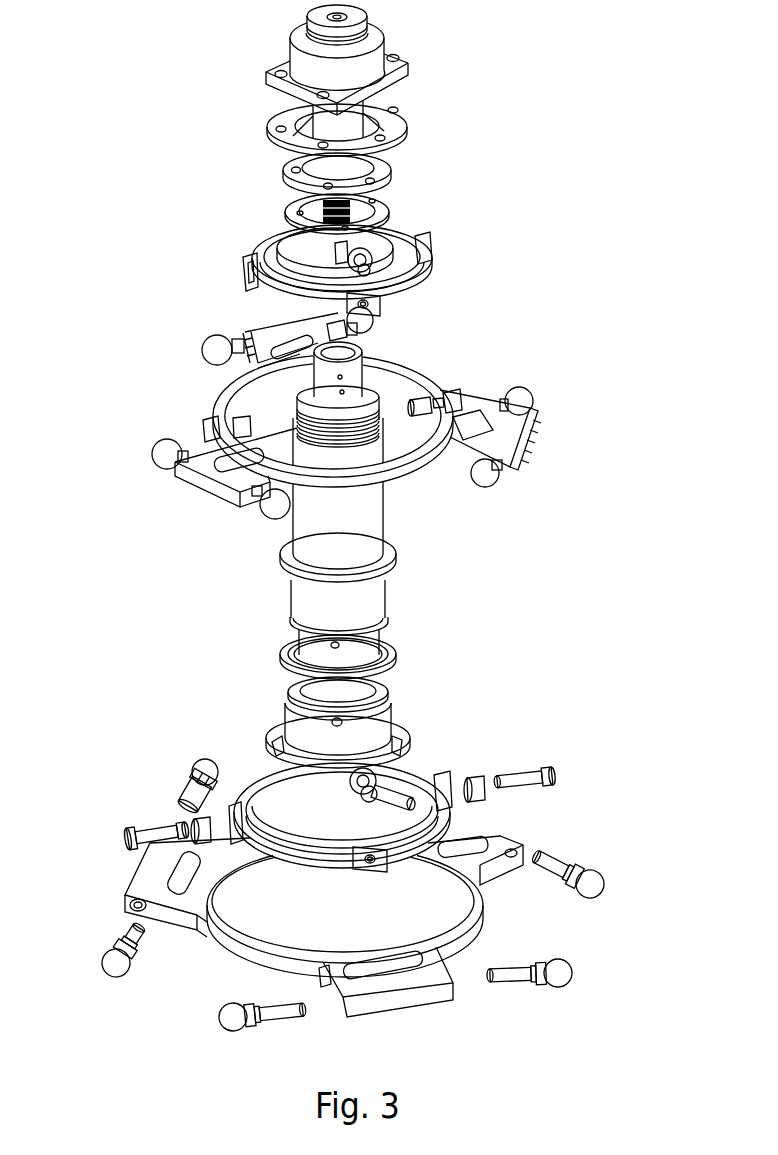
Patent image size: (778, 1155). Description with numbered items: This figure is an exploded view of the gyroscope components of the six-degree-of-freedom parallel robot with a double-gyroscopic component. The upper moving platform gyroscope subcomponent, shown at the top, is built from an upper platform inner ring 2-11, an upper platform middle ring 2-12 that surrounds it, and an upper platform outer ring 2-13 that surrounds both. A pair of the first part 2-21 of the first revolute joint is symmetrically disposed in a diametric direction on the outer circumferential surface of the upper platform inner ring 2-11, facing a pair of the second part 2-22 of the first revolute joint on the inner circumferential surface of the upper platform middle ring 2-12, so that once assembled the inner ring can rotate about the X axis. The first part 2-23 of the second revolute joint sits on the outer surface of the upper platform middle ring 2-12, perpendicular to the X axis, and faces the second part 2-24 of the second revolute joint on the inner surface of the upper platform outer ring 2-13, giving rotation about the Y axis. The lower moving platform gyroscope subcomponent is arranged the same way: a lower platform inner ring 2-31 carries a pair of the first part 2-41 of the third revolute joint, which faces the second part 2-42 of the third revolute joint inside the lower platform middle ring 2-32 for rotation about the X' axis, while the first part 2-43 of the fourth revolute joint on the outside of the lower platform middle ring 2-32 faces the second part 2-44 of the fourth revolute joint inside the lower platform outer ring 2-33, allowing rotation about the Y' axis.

The upper platform inner ring 2-11 is at (385, 200).
The first part of the first revolute joint 2-21 is at (397, 223).
The upper platform middle ring 2-12 is at (427, 243).
The clamp block 2-22 is at (381, 298).
The first part of the second revolute joint 2-23 is at (242, 268).
The second part of the second revolute joint 2-24 is at (217, 403).
The upper platform outer ring 2-13 is at (417, 380).
The lower platform inner ring 2-31 is at (410, 737).
The first part of the third revolute joint 2-41 is at (300, 727).
The lower platform middle ring 2-32 is at (437, 783).
The second part of the third revolute joint 2-42 is at (380, 863).
The first part of the fourth revolute joint 2-43 is at (233, 793).
The second part of the fourth revolute joint 2-44 is at (152, 828).
The lower platform outer ring 2-33 is at (480, 922).